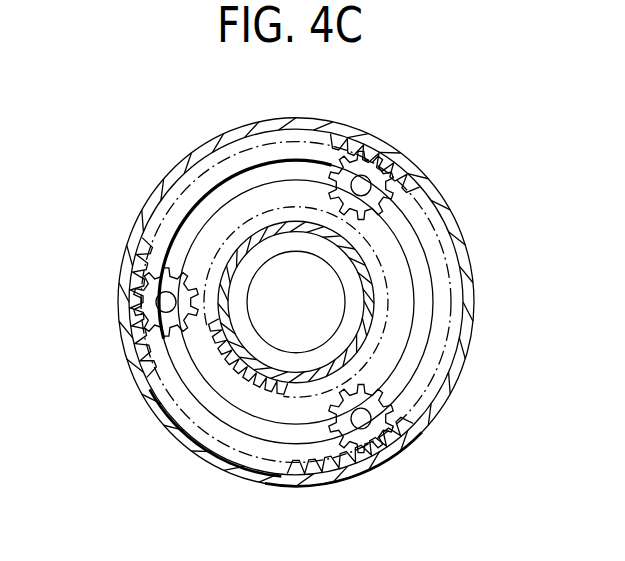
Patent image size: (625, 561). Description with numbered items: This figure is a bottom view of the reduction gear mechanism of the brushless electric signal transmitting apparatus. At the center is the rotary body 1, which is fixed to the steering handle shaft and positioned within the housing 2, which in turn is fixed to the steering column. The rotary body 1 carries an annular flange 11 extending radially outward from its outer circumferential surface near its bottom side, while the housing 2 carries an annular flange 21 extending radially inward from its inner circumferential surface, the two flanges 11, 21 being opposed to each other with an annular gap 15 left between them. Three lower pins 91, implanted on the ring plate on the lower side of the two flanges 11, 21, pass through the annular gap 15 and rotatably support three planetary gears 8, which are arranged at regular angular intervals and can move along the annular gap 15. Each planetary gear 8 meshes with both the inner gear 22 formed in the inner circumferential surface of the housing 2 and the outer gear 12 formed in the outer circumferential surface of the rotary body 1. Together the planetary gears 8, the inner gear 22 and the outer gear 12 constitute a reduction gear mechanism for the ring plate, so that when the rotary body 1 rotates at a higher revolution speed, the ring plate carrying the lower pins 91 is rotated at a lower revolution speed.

The rotary body 1 is at (225, 272).
The housing 2 is at (418, 178).
The planetary gears 8 is at (371, 416).
The annular flange 11 is at (255, 205).
The outer gear 12 is at (243, 382).
The annular gap 15 is at (205, 210).
The annular flange 21 is at (281, 150).
The inner gear 22 is at (335, 466).
The lower pins 91 is at (362, 188).